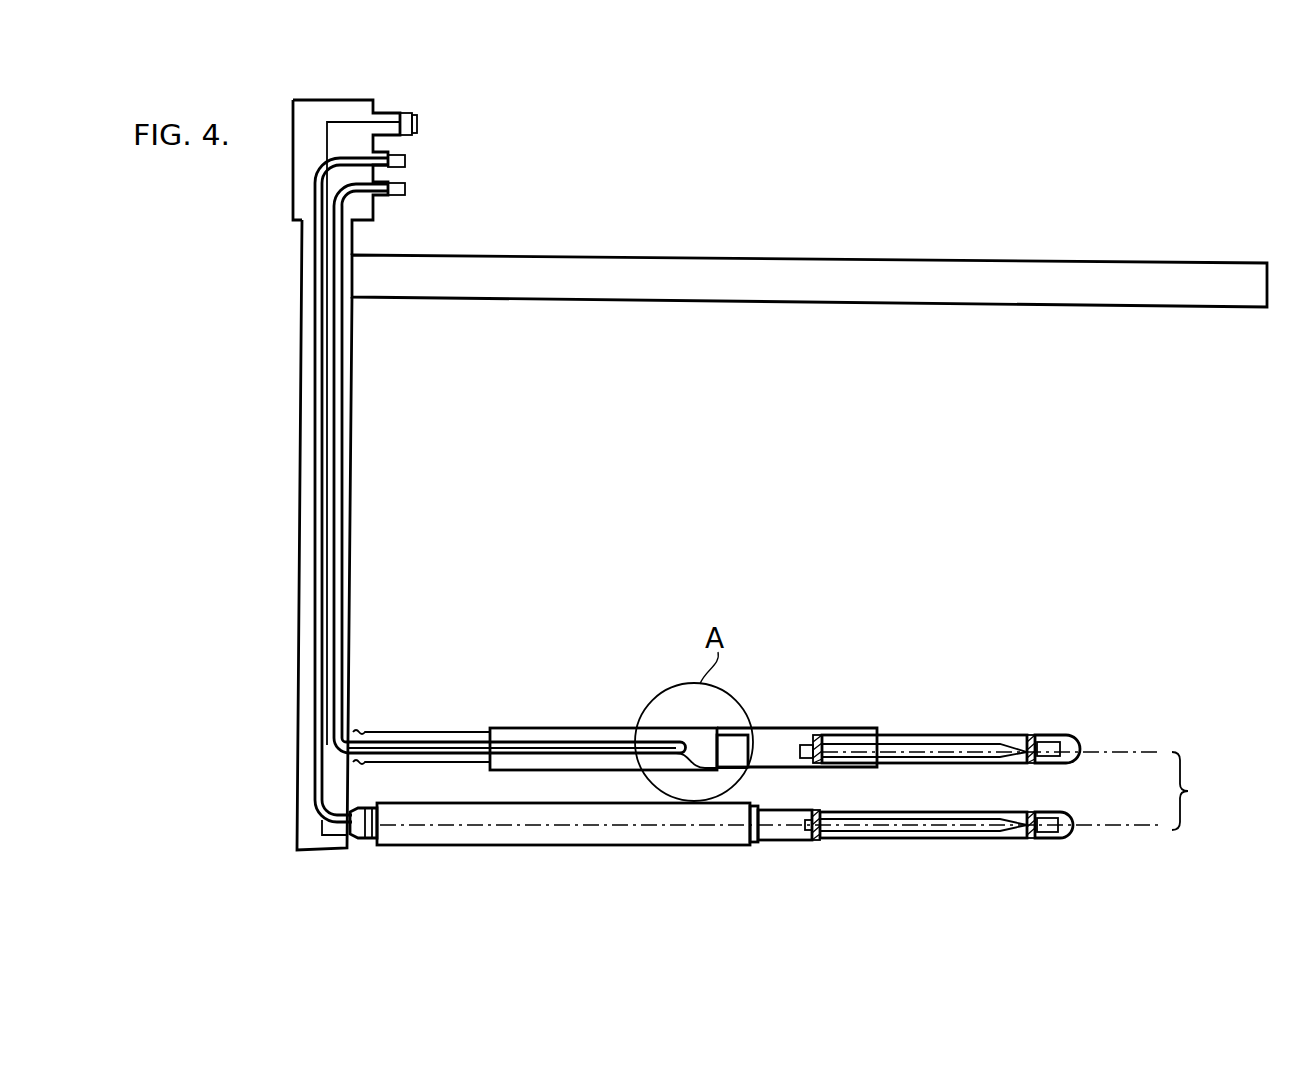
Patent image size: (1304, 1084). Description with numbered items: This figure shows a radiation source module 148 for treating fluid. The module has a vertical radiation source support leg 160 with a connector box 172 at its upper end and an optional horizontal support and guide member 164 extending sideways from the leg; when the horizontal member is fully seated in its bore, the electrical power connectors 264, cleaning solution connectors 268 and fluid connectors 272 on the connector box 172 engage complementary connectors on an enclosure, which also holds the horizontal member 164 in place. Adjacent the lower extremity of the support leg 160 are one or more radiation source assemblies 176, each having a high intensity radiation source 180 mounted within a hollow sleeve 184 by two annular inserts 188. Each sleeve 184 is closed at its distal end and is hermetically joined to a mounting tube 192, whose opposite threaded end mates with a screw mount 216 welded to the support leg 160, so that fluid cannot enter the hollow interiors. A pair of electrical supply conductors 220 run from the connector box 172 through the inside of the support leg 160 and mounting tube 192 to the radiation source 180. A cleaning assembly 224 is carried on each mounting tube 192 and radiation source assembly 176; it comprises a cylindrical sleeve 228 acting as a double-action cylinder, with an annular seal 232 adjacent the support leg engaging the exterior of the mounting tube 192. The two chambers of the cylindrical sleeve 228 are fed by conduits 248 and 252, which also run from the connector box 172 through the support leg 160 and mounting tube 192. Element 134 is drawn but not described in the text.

The inlet fitting 134 is at (880, 724).
The radiation source module 148 is at (563, 140).
The radiation source support leg 160 is at (298, 468).
The horizontal support and guide member 164 is at (982, 262).
The connector box 172 is at (293, 180).
The radiation source assembly 176 is at (1206, 791).
The high intensity radiation source 180 is at (950, 745).
The hollow sleeve 184 is at (1070, 737).
The annular insert 188 is at (818, 735).
The mounting tube 192 is at (404, 728).
The screw mount 216 is at (364, 721).
The electrical supply conductor 220 is at (328, 402).
The cleaning assembly 224 is at (582, 846).
The cylindrical sleeve 228 is at (592, 725).
The annular seal 232 is at (492, 727).
The conduit 248 is at (450, 732).
The conduit 252 is at (460, 764).
The electrical power connector 264 is at (414, 110).
The cleaning solution connector 268 is at (406, 190).
The fluid connector 272 is at (406, 161).